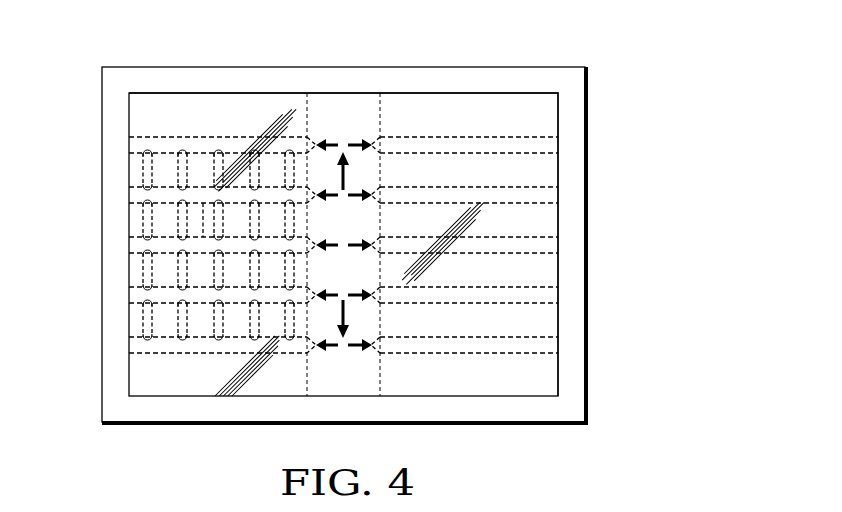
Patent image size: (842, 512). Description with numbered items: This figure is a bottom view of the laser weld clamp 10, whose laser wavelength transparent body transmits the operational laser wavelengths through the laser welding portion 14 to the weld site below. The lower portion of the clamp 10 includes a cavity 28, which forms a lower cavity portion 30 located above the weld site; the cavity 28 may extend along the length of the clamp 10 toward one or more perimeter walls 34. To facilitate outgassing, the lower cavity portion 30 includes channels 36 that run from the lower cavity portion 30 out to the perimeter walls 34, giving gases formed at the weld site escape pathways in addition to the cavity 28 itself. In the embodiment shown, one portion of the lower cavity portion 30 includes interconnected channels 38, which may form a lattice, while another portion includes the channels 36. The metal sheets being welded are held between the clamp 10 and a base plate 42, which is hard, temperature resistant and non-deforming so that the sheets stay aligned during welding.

The laser weld clamp 10 is at (655, 73).
The laser welding portion 14 is at (538, 373).
The cavity 28 is at (346, 108).
The lower cavity portion 30 is at (347, 384).
The perimeter walls 34 is at (558, 121).
The channels 36 is at (525, 337).
The interconnected channels 38 is at (186, 137).
The base plate 42 is at (588, 408).